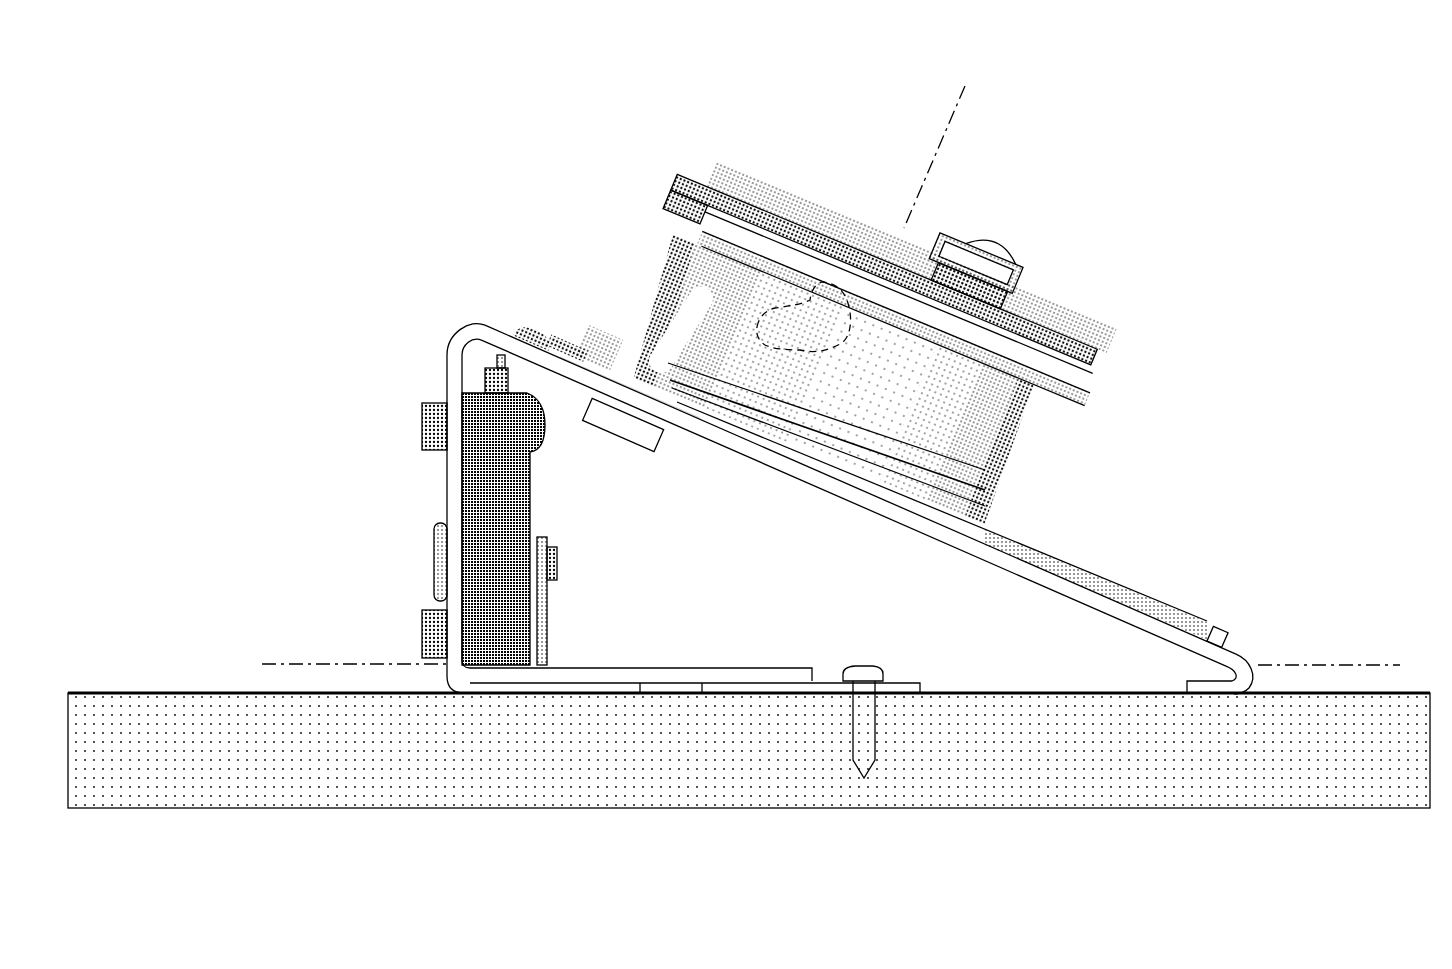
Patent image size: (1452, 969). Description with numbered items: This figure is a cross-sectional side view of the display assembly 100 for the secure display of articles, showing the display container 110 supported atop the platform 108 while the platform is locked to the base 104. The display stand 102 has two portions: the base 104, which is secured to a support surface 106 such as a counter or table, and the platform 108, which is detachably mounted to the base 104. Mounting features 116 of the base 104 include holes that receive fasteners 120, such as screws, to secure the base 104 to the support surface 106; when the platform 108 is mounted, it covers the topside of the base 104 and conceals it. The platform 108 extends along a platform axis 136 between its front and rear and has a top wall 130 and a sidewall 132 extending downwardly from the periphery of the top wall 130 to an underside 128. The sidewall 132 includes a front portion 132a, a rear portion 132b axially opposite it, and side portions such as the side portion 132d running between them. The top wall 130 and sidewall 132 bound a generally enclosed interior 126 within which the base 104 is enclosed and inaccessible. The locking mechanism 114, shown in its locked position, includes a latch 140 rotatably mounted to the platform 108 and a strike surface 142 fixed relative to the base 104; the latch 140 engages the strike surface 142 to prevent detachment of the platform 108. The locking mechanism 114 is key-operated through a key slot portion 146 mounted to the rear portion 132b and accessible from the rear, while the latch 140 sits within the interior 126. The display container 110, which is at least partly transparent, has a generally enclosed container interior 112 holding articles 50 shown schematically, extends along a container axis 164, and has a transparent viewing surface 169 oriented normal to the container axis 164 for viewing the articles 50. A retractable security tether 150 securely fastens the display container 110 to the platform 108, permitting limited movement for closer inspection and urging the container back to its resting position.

The display assembly 100 is at (388, 92).
The display stand 102 is at (402, 277).
The base 104 is at (842, 619).
The support surface 106 is at (1022, 691).
The platform 108 is at (430, 346).
The display container 110 is at (1108, 240).
The container interior 112 is at (986, 407).
The locking mechanism 114 is at (578, 553).
The mounting features 116 is at (883, 690).
The fasteners 120 is at (870, 667).
The interior 126 is at (761, 642).
The underside 128 is at (511, 698).
The top wall 130 is at (987, 545).
The sidewall 132 is at (455, 379).
The front portion 132a is at (1264, 672).
The rear portion 132b is at (440, 477).
The side portion 132d is at (788, 544).
The platform axis 136 is at (305, 657).
The latch 140 is at (548, 596).
The strike surface 142 is at (548, 656).
The key slot portion 146 is at (425, 557).
The retractable security tether 150 is at (574, 430).
The container axis 164 is at (945, 132).
The viewing surface 169 is at (817, 196).
The articles 50 is at (848, 343).